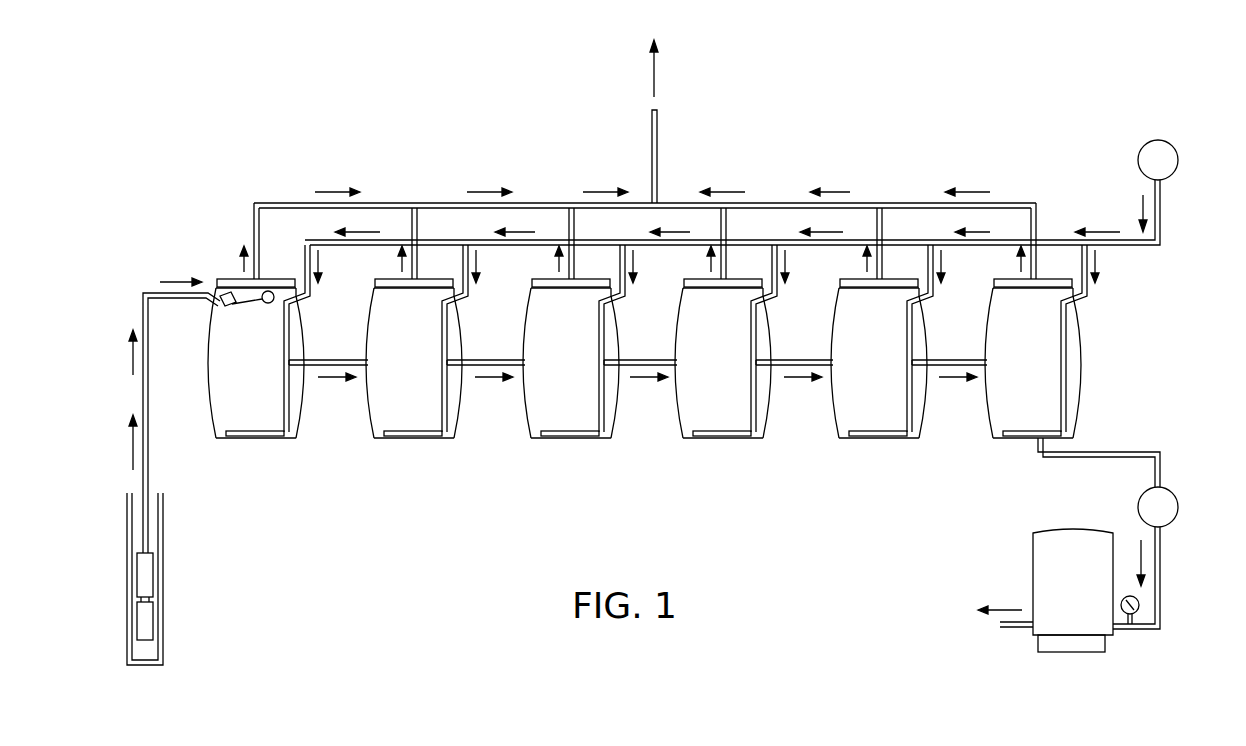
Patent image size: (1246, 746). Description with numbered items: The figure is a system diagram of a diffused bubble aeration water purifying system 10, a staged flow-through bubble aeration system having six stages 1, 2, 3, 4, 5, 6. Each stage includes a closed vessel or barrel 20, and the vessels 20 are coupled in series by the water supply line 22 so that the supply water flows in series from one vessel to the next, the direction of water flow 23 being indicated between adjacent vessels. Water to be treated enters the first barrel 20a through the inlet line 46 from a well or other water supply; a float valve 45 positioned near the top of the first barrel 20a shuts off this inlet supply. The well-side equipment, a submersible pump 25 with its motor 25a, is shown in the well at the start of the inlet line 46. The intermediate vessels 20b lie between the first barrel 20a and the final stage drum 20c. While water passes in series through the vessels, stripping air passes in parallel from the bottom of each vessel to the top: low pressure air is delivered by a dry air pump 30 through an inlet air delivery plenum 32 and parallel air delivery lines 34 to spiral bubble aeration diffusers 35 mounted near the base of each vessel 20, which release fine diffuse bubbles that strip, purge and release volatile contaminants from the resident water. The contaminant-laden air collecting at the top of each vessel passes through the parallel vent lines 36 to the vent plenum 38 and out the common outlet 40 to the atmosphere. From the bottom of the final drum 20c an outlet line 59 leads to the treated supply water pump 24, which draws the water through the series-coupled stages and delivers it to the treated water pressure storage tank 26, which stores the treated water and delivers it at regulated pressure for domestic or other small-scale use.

The diffused bubble aeration water purifying system 10 is at (910, 158).
The closed vessel or barrel 20 is at (306, 430).
The first barrel 20a is at (208, 333).
The intermediate tank 20b is at (465, 334).
The final stage drum or vessel 20c is at (1085, 372).
The first stage 1 is at (270, 453).
The second stage 2 is at (428, 453).
The third stage 3 is at (585, 453).
The fourth stage 4 is at (737, 453).
The fifth stage 5 is at (893, 453).
The sixth stage 6 is at (1015, 456).
The water supply line 22 is at (313, 357).
The liquid flow direction 23 is at (323, 380).
The treated supply water pump 24 is at (1180, 500).
The well pump 25 is at (163, 593).
The pump motor 25a is at (153, 621).
The treated water pressure storage tank 26 is at (1033, 548).
The dry air pump 30 is at (1180, 160).
The inlet air delivery plenum 32 is at (778, 240).
The air delivery line 34 is at (628, 268).
The spiral bubble aeration diffuser 35 is at (266, 430).
The outlet or vent line 36 is at (568, 212).
The outlet or vent plenum 38 is at (768, 203).
The common outlet 40 is at (657, 162).
The float valve 45 is at (240, 287).
The inlet line 46 is at (145, 292).
The outlet line 59 is at (1108, 460).